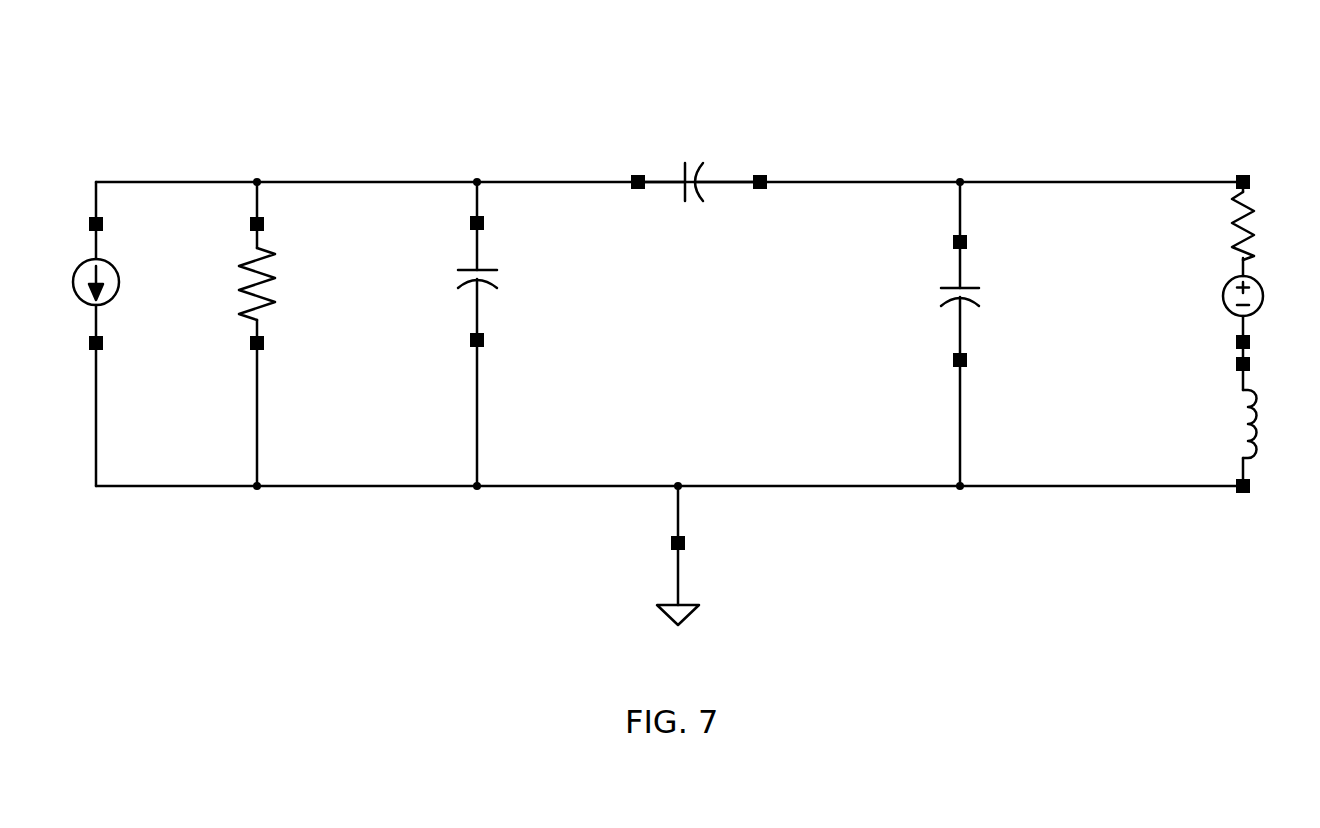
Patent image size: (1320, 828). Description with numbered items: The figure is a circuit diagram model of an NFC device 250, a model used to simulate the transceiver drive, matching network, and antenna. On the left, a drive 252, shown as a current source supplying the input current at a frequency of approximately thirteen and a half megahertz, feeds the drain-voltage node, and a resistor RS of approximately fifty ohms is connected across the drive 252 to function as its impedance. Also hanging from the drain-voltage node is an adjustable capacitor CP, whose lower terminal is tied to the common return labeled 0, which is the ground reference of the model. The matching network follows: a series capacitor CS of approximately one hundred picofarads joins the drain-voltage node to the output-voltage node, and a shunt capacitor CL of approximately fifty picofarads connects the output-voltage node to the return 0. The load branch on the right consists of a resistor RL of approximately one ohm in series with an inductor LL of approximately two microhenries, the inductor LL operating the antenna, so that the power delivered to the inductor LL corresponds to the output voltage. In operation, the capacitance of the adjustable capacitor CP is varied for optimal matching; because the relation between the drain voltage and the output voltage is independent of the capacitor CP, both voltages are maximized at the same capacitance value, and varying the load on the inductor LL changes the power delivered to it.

The NFC device 250 is at (664, 319).
The drive 252 is at (73, 281).
The ground node 0 is at (572, 473).
The resistor RS is at (277, 284).
The adjustable capacitor CP is at (496, 278).
The capacitor CS is at (699, 164).
The capacitor CL is at (980, 301).
The resistor RL is at (1261, 226).
The inductor LL is at (1270, 424).